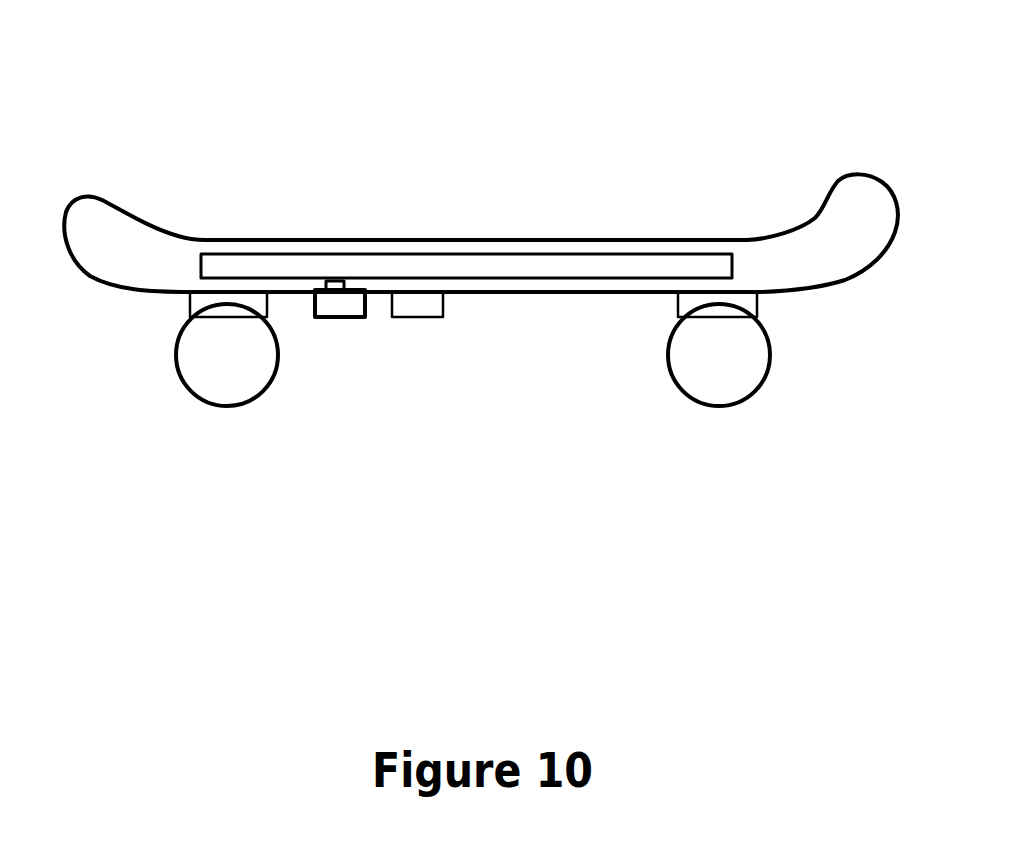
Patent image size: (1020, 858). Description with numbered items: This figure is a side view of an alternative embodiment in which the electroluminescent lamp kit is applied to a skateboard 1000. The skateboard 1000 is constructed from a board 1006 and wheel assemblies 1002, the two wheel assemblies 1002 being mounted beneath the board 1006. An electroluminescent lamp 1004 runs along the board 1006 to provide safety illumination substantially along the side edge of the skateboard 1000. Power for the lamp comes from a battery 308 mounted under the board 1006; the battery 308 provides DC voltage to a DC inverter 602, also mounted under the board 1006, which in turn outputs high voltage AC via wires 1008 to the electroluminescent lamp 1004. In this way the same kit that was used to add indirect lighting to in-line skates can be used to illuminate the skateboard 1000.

The skateboard 1000 is at (666, 131).
The wheel assemblies 1002 is at (230, 365).
The electroluminescent lamp 1004 is at (657, 267).
The board 1006 is at (128, 252).
The wires 1008 is at (348, 284).
The DC inverter 602 is at (328, 302).
The battery 308 is at (428, 303).